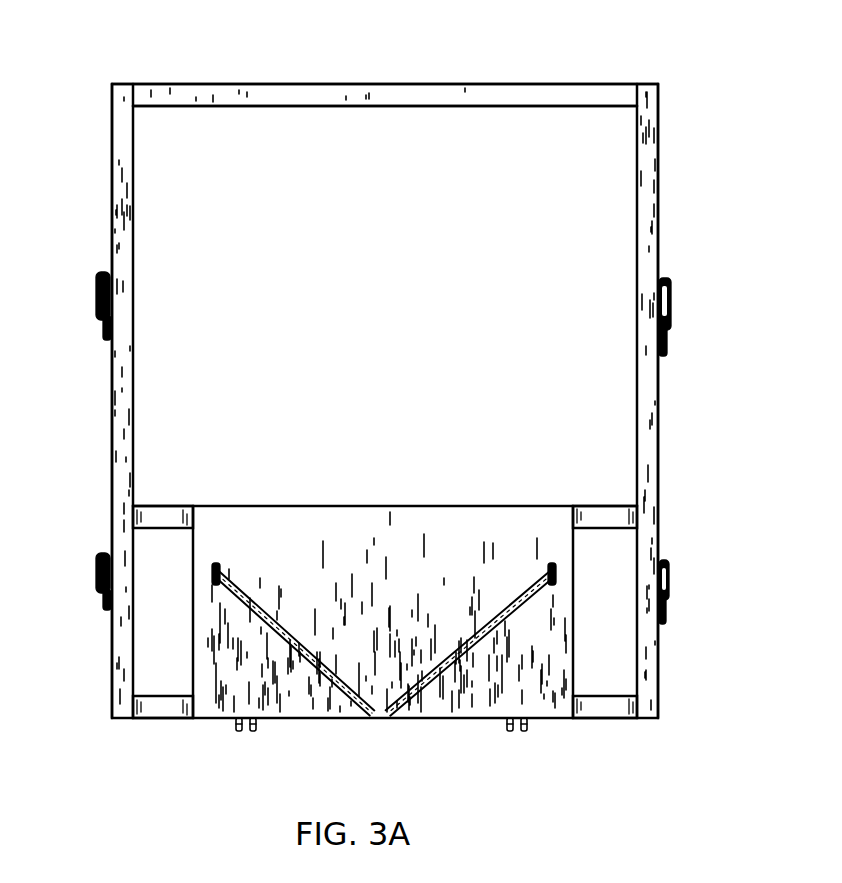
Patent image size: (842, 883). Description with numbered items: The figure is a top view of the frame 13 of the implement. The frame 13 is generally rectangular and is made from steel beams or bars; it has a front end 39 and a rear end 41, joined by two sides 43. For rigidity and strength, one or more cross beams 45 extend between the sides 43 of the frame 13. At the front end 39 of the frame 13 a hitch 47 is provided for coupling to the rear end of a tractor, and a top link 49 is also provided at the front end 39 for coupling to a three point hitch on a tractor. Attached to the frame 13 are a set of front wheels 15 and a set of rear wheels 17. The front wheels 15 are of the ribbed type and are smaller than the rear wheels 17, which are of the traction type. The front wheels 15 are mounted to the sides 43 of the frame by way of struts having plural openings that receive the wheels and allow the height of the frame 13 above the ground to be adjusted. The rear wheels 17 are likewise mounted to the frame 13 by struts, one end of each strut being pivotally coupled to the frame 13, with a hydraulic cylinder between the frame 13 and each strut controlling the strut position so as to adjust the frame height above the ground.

The frame 13 is at (651, 160).
The rear end 41 is at (228, 98).
The sides 43 is at (113, 396).
The rear wheels 17 is at (672, 290).
The front wheels 15 is at (670, 572).
The cross beams 45 is at (170, 512).
The front end 39 is at (162, 705).
The top link 49 is at (370, 718).
The hitch 47 is at (238, 733).